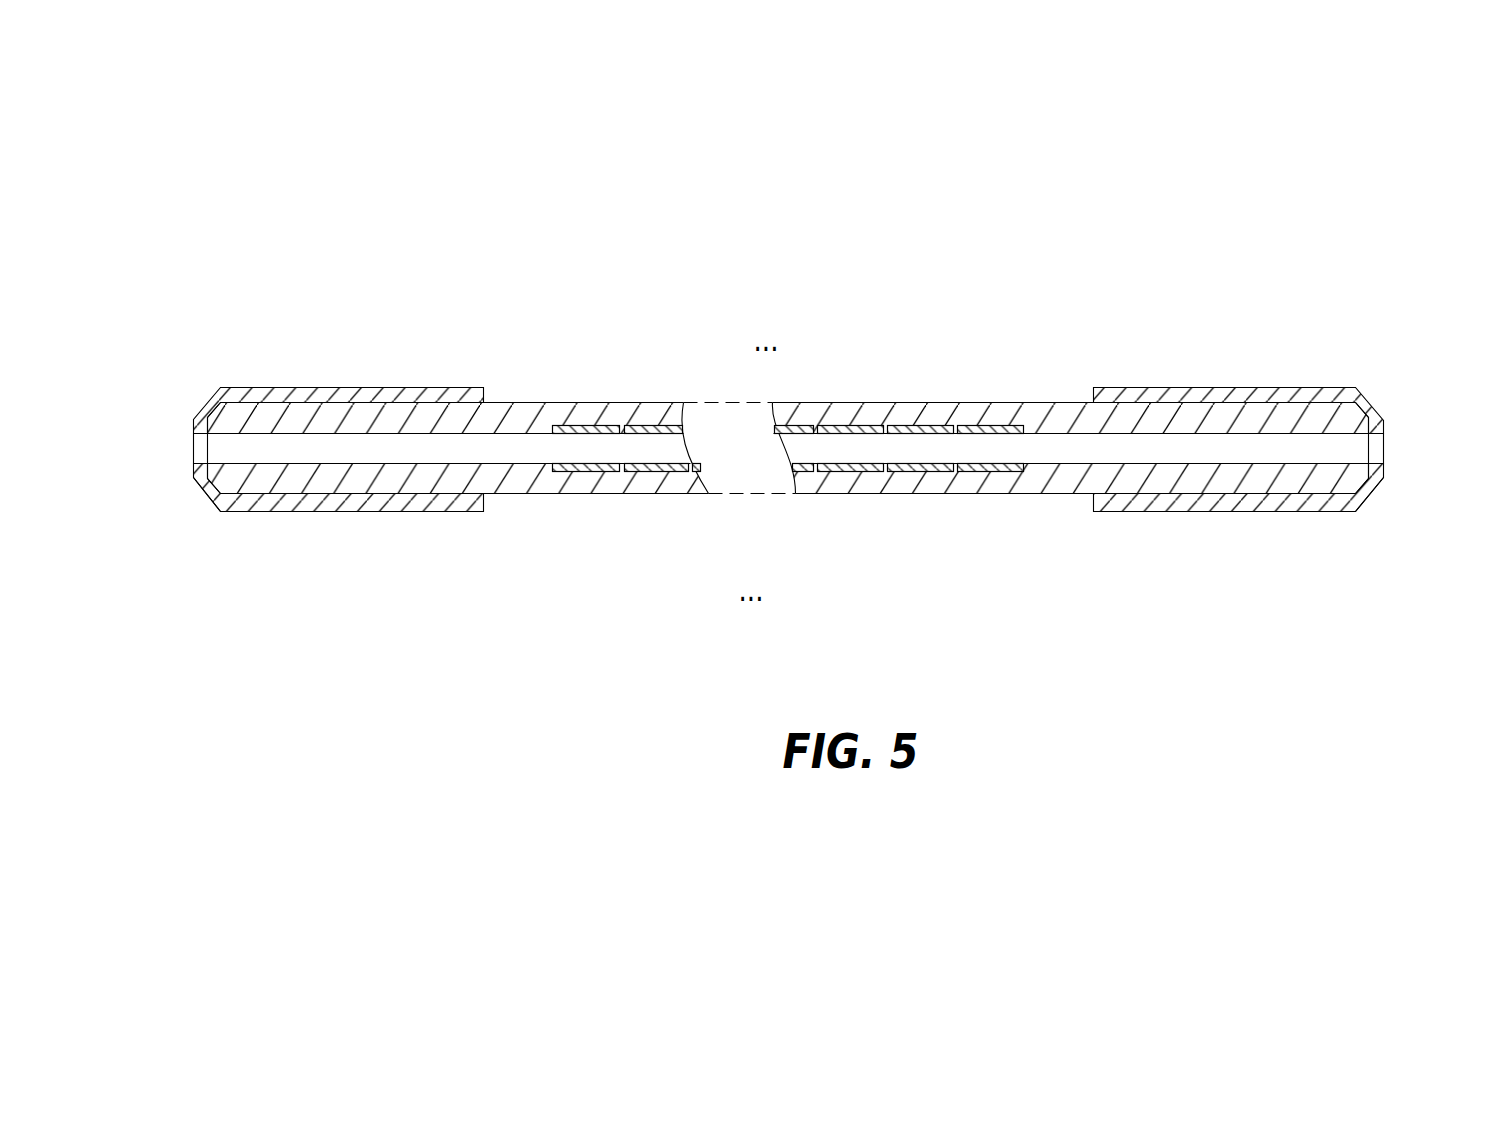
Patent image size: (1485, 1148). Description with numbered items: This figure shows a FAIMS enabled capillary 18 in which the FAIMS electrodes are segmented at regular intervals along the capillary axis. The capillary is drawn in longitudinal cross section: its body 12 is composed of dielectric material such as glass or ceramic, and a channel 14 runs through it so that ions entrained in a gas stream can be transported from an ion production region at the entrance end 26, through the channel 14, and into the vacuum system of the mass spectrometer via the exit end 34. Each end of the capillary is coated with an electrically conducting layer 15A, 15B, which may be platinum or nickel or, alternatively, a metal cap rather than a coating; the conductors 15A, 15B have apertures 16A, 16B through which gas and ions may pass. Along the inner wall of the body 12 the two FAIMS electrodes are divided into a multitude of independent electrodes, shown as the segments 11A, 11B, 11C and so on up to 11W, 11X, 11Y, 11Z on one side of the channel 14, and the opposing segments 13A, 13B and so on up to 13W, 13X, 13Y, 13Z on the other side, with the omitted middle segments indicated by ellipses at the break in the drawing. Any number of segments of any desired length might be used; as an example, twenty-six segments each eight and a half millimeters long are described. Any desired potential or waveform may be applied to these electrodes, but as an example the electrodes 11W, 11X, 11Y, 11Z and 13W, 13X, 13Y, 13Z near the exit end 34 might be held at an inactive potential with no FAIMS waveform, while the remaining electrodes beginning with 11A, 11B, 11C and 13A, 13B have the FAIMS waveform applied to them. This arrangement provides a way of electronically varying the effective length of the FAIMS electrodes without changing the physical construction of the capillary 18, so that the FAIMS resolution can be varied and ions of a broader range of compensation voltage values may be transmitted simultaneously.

The electrode segment 11A is at (575, 470).
The electrode segment 11B is at (657, 470).
The electrode segment 11C is at (695, 470).
The electrode segment 11W is at (800, 470).
The electrode segment 11X is at (840, 470).
The electrode segment 11Y is at (915, 470).
The electrode segment 11Z is at (988, 470).
The body 12 is at (492, 417).
The electrode segment 13A is at (595, 420).
The electrode segment 13B is at (652, 420).
The electrode segment 13W is at (797, 420).
The electrode segment 13X is at (863, 420).
The electrode segment 13Y is at (925, 420).
The electrode segment 13Z is at (997, 420).
The channel 14 is at (393, 445).
The electrically conducting layer 15A is at (318, 377).
The electrically conducting layer 15B is at (1212, 377).
The aperture 16A is at (183, 450).
The aperture 16B is at (1385, 442).
The capillary 18 is at (829, 249).
The entrance end 26 is at (258, 518).
The exit end 34 is at (1357, 518).